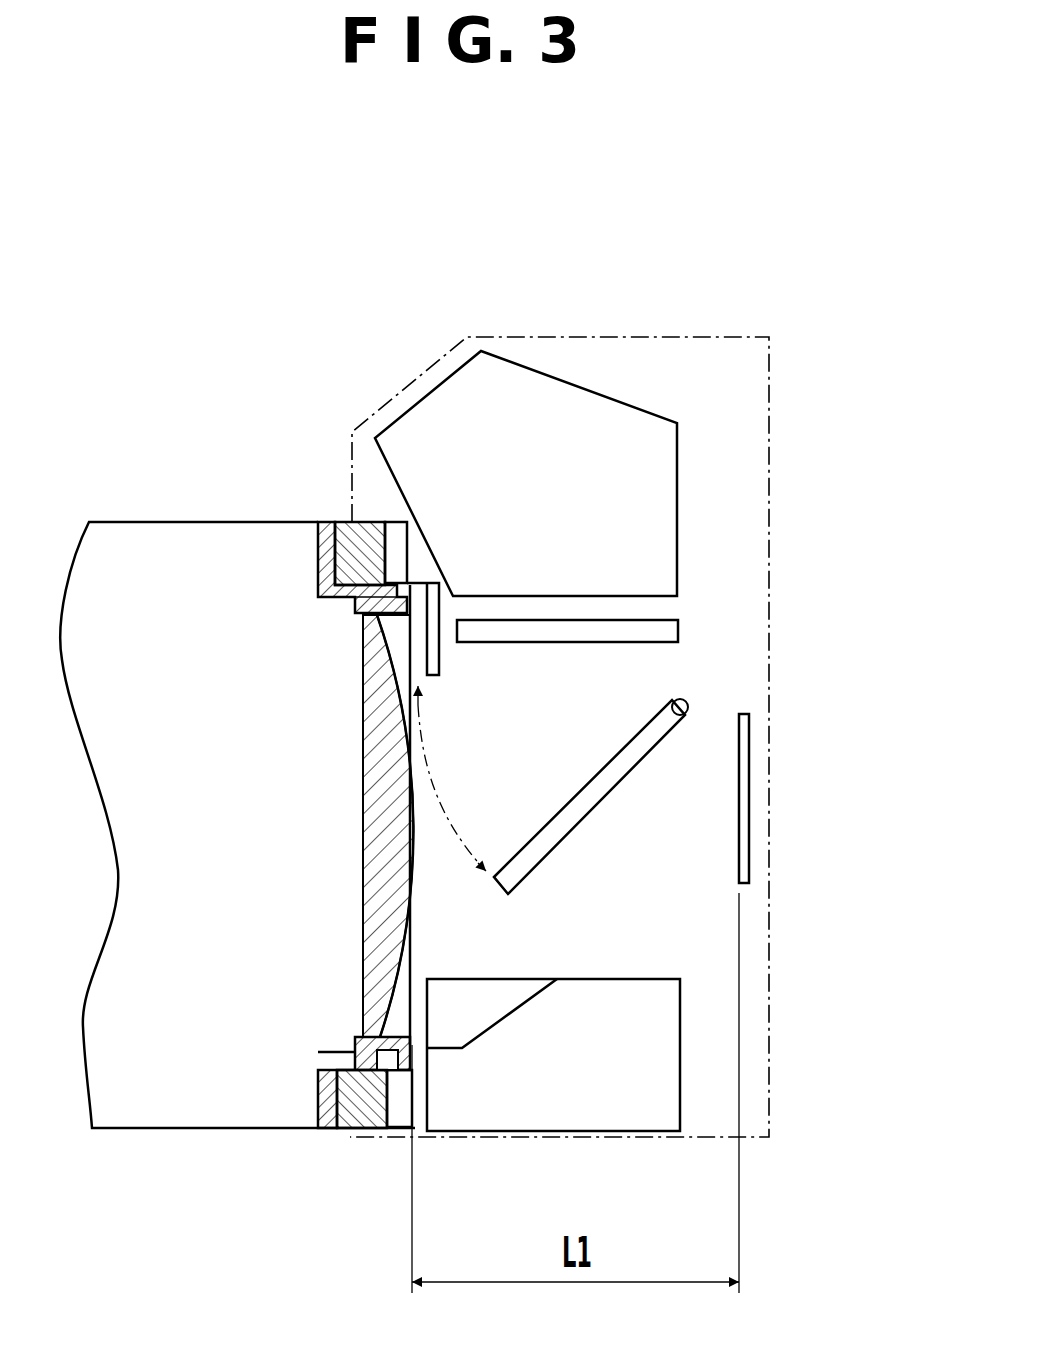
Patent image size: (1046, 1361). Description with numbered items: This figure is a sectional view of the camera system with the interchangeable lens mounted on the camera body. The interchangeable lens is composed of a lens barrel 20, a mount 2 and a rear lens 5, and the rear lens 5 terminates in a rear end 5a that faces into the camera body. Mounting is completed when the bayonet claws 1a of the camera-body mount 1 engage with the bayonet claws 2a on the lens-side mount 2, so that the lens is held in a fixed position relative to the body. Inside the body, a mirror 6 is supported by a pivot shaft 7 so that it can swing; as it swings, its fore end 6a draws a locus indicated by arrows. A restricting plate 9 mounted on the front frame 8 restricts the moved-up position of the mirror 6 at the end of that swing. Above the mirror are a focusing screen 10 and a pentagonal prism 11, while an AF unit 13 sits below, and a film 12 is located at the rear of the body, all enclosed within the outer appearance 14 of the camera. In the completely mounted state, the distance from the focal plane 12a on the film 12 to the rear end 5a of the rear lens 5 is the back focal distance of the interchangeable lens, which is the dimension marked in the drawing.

The mount 1 is at (345, 527).
The bayonet claws 1a is at (375, 618).
The mount 2 is at (322, 523).
The bayonet claws 2a is at (400, 617).
The rear lens 5 is at (380, 803).
The rear end 5a is at (418, 835).
The mirror 6 is at (633, 757).
The fore end 6a is at (500, 890).
The pivot shaft 7 is at (688, 703).
The front frame 8 is at (393, 525).
The restricting plate 9 is at (434, 660).
The focusing screen 10 is at (662, 630).
The pentagonal prism 11 is at (520, 383).
The film 12 is at (743, 840).
The focal plane 12a is at (740, 860).
The AF unit 13 is at (623, 1108).
The outer appearance 14 is at (638, 337).
The lens barrel 20 is at (143, 553).